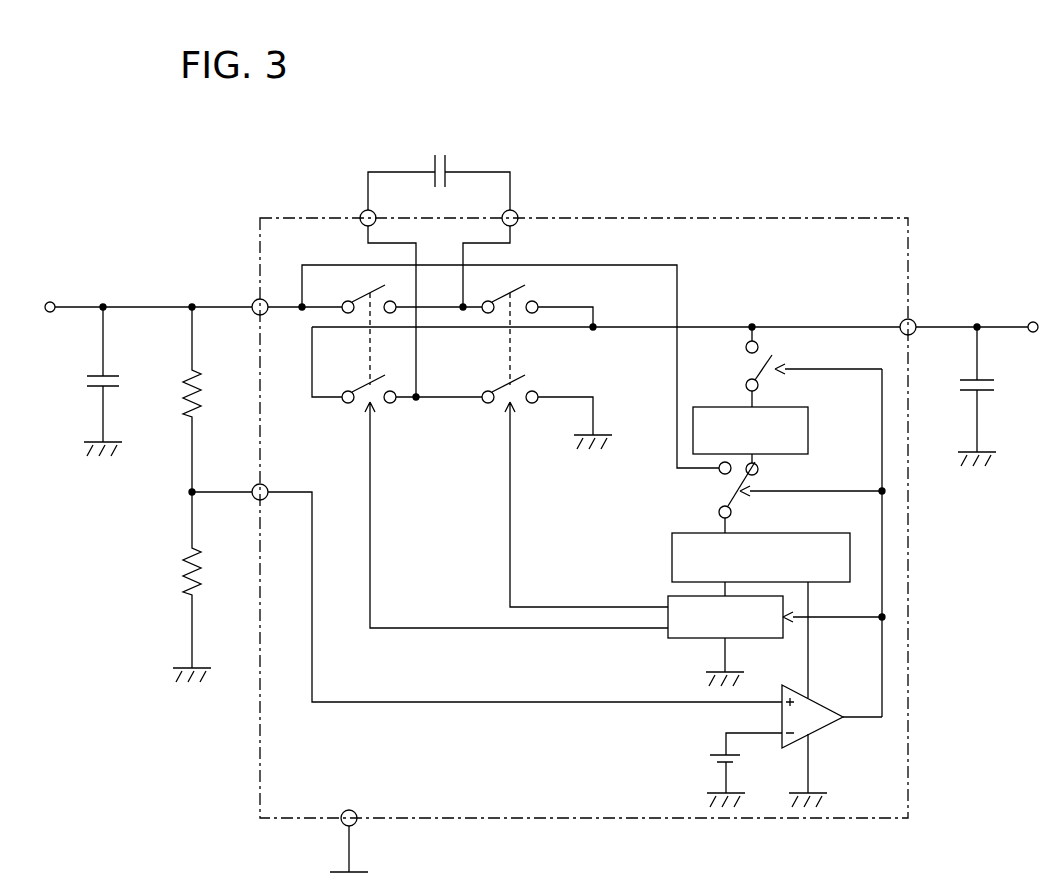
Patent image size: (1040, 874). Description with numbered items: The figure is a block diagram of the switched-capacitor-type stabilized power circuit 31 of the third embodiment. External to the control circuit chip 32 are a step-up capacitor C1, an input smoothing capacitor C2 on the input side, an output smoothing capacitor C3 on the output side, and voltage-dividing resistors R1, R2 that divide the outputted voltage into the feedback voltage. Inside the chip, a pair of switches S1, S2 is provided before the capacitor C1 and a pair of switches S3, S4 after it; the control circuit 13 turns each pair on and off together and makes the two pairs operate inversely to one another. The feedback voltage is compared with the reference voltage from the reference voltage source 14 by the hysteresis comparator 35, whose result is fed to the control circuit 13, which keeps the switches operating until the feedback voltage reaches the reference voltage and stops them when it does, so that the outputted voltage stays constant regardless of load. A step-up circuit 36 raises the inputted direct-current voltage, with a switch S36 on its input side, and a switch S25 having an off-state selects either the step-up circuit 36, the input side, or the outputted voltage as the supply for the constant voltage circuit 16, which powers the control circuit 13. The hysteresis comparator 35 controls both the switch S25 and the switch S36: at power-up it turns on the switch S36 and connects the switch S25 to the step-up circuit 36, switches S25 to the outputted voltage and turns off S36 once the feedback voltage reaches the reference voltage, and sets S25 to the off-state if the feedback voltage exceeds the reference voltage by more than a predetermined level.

The switched-capacitor-type stabilized power circuit 31 is at (212, 178).
The control circuit chip 32 is at (733, 216).
The step-up circuit 36 is at (808, 428).
The constant voltage circuit 16 is at (671, 553).
The control circuit 13 is at (690, 638).
The reference voltage source 14 is at (718, 753).
The hysteresis comparator 35 is at (822, 734).
The step-up capacitor C1 is at (440, 167).
The input smoothing capacitor C2 is at (980, 379).
The output smoothing capacitor C3 is at (97, 374).
The voltage-dividing resistor R1 is at (185, 390).
The voltage-dividing resistor R2 is at (185, 567).
The switch S1 is at (505, 295).
The switch S2 is at (505, 385).
The switch S3 is at (365, 295).
The switch S4 is at (365, 385).
The switch S25 is at (733, 497).
The switch S36 is at (759, 368).